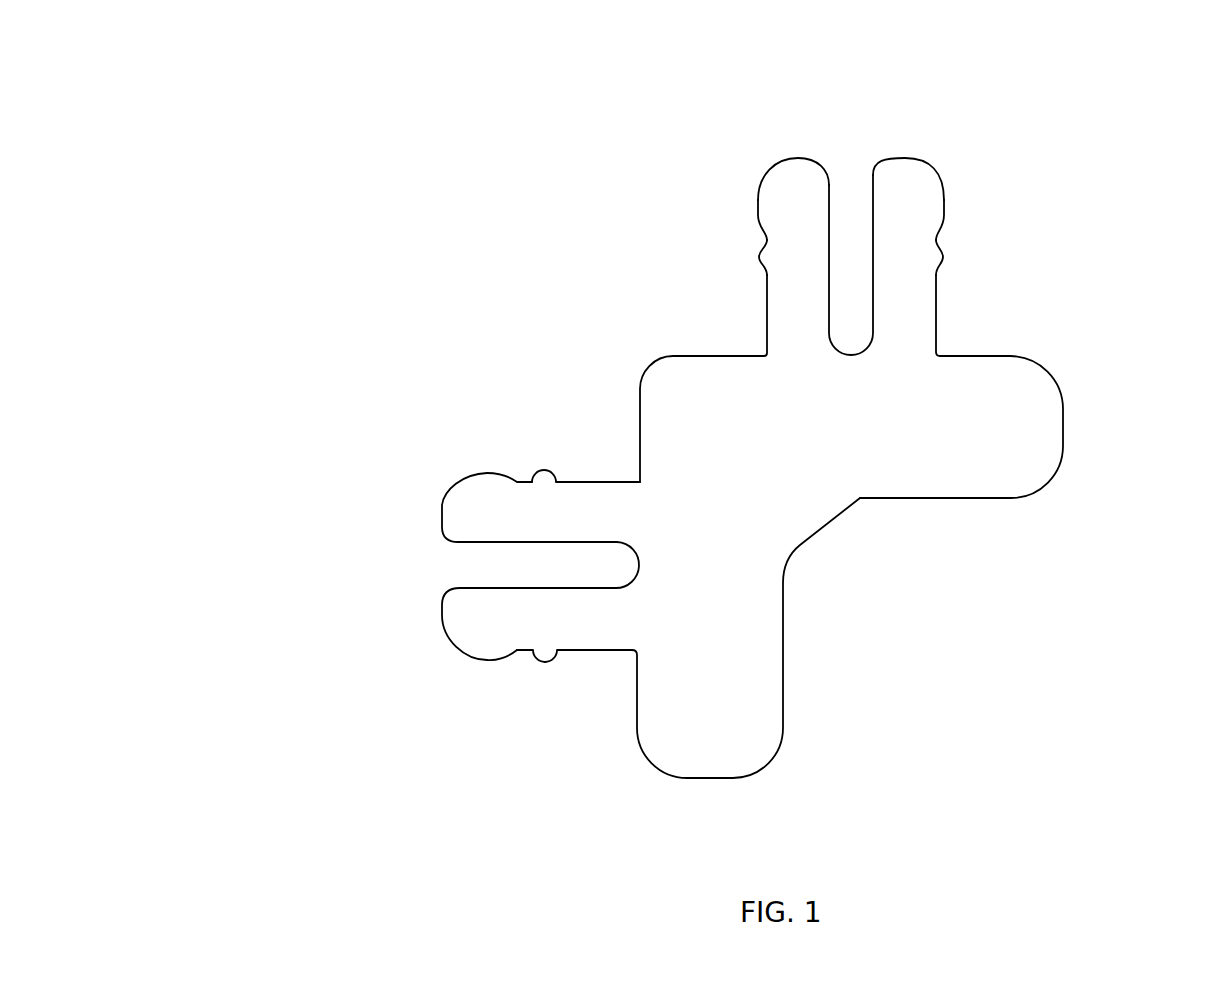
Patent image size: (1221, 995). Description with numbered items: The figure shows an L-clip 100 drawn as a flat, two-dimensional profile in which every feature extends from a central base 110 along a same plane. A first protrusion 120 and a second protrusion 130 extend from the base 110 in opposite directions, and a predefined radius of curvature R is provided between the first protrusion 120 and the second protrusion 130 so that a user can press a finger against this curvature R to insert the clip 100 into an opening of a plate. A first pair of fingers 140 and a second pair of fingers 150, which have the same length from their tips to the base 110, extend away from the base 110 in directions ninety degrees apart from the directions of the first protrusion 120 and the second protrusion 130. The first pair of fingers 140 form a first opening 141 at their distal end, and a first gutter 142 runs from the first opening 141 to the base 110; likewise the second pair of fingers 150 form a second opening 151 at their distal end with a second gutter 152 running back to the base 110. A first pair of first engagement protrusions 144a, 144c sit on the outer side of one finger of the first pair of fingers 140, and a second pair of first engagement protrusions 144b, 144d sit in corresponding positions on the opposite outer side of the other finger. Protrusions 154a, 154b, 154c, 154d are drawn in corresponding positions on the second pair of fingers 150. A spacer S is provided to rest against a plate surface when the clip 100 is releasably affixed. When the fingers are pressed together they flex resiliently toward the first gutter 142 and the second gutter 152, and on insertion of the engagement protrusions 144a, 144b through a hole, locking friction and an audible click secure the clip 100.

The L-clip 100 is at (206, 49).
The base 110 is at (805, 463).
The first protrusion 120 is at (987, 440).
The second protrusion 130 is at (716, 708).
The first pair of fingers 140 is at (776, 197).
The first opening 141 is at (852, 172).
The first gutter 142 is at (770, 181).
The first engagement protrusion 144a is at (950, 200).
The first engagement protrusion 144b is at (750, 205).
The first engagement protrusion 144c is at (947, 263).
The first engagement protrusion 144d is at (750, 258).
The second pair of fingers 150 is at (413, 477).
The second opening 151 is at (440, 567).
The second gutter 152 is at (570, 563).
The protrusion 154a is at (487, 473).
The protrusion 154b is at (462, 657).
The protrusion 154c is at (543, 473).
The protrusion 154d is at (533, 668).
The spacer S is at (650, 403).
The radius of curvature R is at (812, 555).